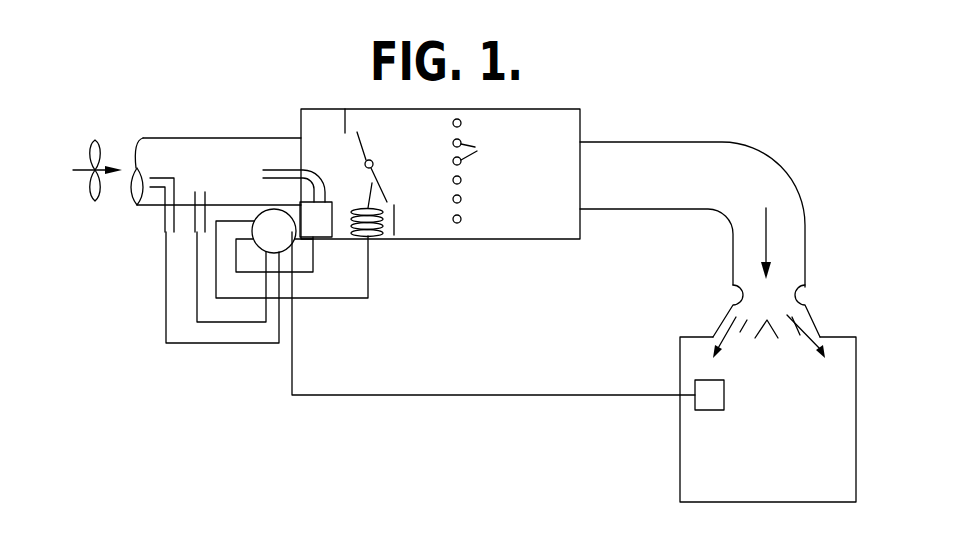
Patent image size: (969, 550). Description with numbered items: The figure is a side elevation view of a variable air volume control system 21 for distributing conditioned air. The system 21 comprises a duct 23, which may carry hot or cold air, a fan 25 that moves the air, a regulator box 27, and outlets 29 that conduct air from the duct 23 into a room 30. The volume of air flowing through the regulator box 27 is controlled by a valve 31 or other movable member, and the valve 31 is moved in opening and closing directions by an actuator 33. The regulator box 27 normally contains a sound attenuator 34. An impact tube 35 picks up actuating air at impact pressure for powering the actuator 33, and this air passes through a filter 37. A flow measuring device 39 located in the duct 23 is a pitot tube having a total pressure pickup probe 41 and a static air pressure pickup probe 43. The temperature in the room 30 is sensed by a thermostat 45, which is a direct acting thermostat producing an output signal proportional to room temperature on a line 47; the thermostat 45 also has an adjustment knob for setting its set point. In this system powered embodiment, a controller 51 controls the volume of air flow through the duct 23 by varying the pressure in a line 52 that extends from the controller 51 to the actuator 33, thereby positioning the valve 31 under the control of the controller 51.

The variable air volume control system 21 is at (190, 39).
The duct 23 is at (275, 138).
The fan 25 is at (90, 142).
The regulator box 27 is at (570, 109).
The outlets 29 is at (733, 287).
The room 30 is at (791, 443).
The valve 31 is at (358, 135).
The actuator 33 is at (383, 235).
The sound attenuator 34 is at (483, 147).
The impact tube 35 is at (272, 168).
The filter 37 is at (325, 201).
The flow measuring device 39 is at (171, 167).
The total pressure pickup probe 41 is at (160, 222).
The static air pressure pickup probe 43 is at (192, 222).
The thermostat 45 is at (703, 410).
The line 47 is at (529, 393).
The controller 51 is at (266, 208).
The line 52 is at (330, 298).